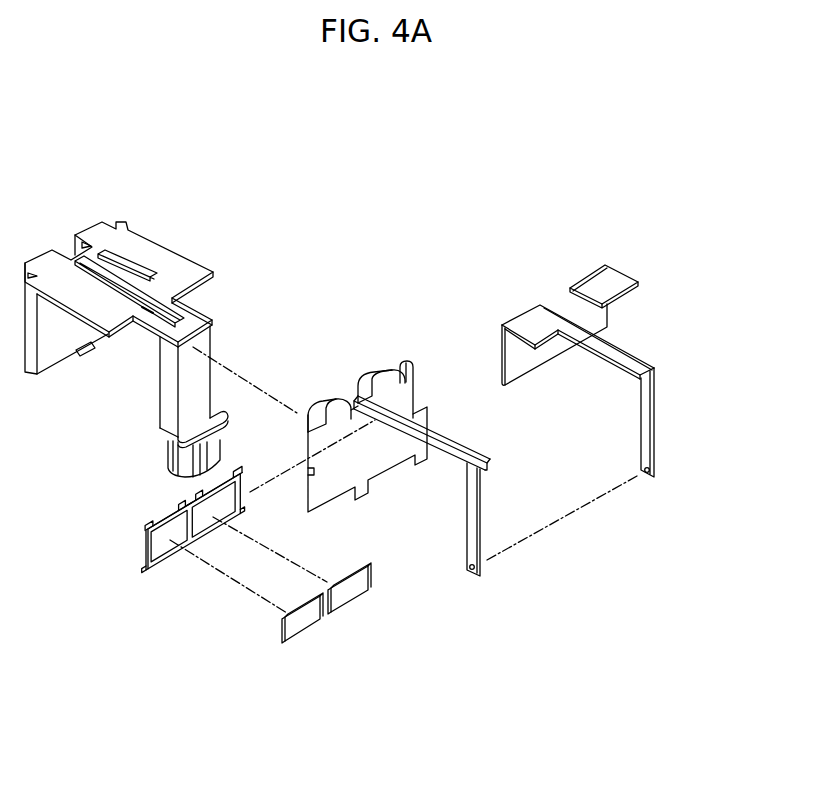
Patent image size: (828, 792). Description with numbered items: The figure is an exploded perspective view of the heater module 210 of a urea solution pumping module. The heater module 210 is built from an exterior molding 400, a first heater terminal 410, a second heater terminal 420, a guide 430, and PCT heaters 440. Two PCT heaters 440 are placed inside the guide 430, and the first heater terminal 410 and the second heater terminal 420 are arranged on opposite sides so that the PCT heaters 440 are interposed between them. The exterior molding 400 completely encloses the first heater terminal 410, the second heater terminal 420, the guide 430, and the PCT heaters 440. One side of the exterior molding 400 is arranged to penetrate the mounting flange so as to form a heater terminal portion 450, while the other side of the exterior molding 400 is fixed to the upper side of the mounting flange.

The heater module 210 is at (358, 228).
The exterior molding 400 is at (167, 257).
The first heater terminal 410 is at (327, 406).
The second heater terminal 420 is at (528, 318).
The guide 430 is at (144, 572).
The PCT heaters 440 is at (348, 593).
The heater terminal portion 450 is at (180, 457).